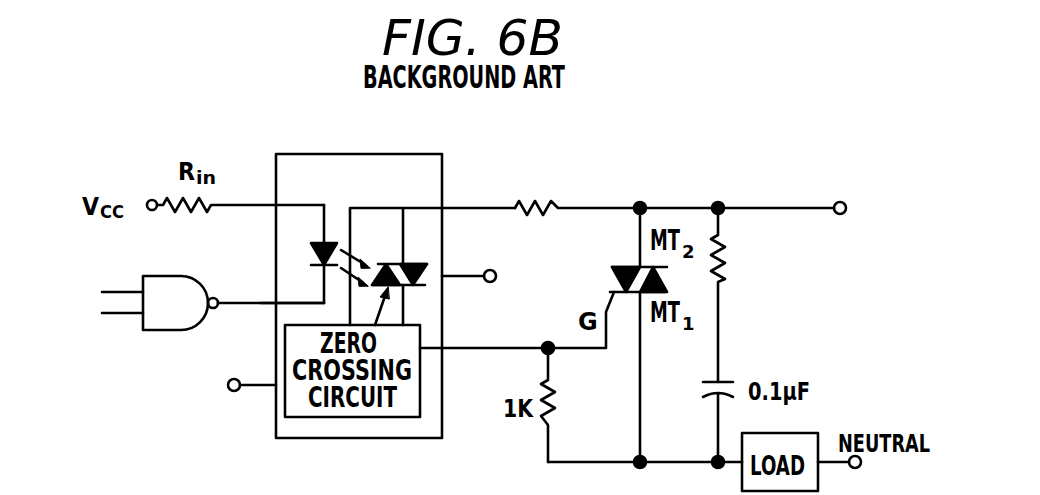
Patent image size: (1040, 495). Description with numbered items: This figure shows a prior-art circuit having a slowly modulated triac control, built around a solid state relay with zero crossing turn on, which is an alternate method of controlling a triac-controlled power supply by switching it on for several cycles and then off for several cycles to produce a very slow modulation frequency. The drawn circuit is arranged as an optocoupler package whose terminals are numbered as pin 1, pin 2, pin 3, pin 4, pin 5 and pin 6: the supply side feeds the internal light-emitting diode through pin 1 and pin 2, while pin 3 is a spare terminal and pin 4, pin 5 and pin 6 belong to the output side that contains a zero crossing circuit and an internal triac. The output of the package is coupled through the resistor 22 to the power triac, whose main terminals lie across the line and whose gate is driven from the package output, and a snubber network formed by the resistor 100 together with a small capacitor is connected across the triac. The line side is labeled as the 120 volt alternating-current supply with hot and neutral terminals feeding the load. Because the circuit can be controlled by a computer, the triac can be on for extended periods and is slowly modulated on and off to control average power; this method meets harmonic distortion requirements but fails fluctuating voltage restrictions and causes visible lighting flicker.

The optocoupler pin 1 (LED anode) 1 is at (288, 207).
The optocoupler pin 2 (LED cathode) 2 is at (286, 287).
The optocoupler pin 3 (no connection) 3 is at (252, 369).
The optocoupler pin 4 (triac output) 4 is at (484, 329).
The optocoupler pin 5 (substrate) 5 is at (469, 261).
The optocoupler pin 6 (triac output) 6 is at (478, 190).
The 22 ohm resistor 22 is at (577, 189).
The 100 ohm snubber resistor 100 is at (743, 295).
The 120 VAC supply 120 is at (790, 283).